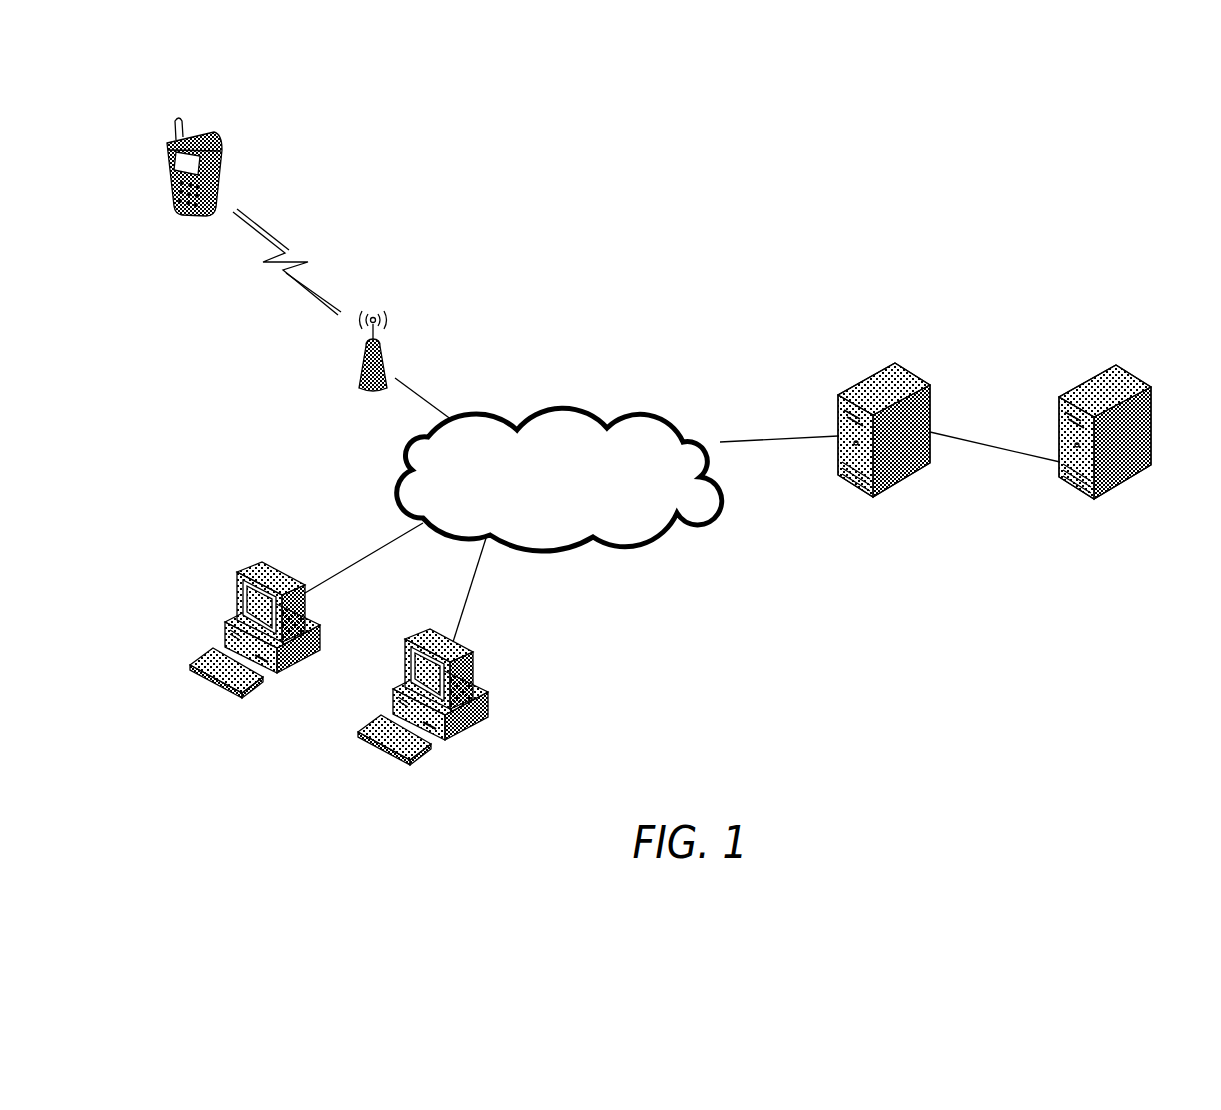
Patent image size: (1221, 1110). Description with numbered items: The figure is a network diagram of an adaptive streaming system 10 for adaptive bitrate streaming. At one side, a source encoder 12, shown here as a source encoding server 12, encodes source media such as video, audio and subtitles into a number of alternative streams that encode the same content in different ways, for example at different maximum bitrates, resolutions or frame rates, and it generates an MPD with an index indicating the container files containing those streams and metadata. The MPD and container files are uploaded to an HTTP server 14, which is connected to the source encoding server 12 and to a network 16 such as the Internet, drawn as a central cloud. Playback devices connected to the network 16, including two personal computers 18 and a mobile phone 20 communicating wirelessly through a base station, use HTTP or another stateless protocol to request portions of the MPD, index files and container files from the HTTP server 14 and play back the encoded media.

The adaptive streaming system 10 is at (702, 262).
The source encoder 12 is at (1123, 365).
The HTTP server 14 is at (902, 382).
The network 16 is at (593, 538).
The personal computers 18 is at (217, 688).
The mobile phones 20 is at (208, 145).